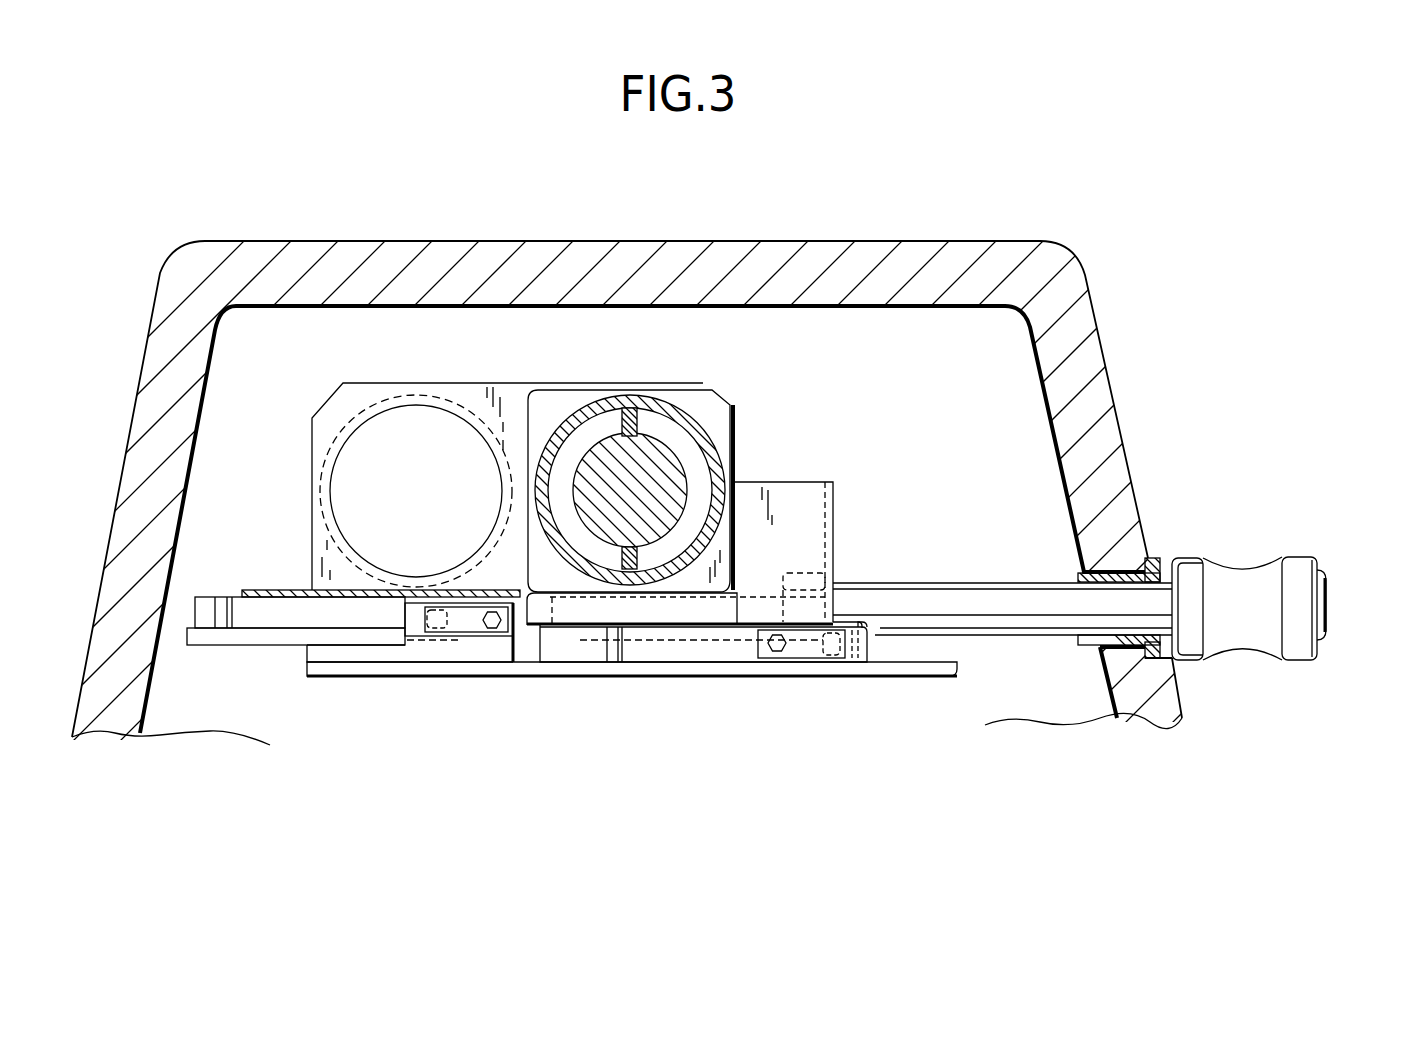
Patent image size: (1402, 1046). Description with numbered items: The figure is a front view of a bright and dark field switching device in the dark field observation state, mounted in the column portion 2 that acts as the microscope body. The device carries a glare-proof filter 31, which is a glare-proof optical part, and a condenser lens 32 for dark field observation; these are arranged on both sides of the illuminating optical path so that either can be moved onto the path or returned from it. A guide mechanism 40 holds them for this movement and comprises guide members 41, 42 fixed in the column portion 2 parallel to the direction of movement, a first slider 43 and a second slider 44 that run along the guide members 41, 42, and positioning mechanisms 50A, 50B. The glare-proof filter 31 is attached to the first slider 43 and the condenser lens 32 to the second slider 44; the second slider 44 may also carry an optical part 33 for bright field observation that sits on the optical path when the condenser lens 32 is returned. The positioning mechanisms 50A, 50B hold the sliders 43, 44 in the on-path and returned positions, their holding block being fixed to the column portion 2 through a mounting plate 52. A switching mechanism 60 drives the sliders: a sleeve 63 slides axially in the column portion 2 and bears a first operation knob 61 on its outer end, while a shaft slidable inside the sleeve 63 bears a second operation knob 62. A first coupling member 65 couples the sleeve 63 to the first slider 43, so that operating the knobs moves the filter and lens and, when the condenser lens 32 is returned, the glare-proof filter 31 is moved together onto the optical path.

The column portion 2 is at (145, 377).
The glare-proof filter 31 is at (405, 418).
The condenser lens 32 is at (662, 430).
The optical part for bright field observation 33 is at (320, 490).
The guide mechanism 40 is at (284, 806).
The guide member 41 is at (245, 646).
The guide member 42 is at (638, 642).
The first slider 43 is at (258, 597).
The second slider 44 is at (714, 662).
The positioning mechanism 50A is at (354, 667).
The positioning mechanism 50B is at (697, 703).
The mounting plate 52 is at (367, 678).
The switching mechanism 60 is at (934, 490).
The first operation knob 61 is at (1241, 568).
The second operation knob 62 is at (1330, 622).
The sleeve 63 is at (998, 580).
The first coupling member 65 is at (508, 400).